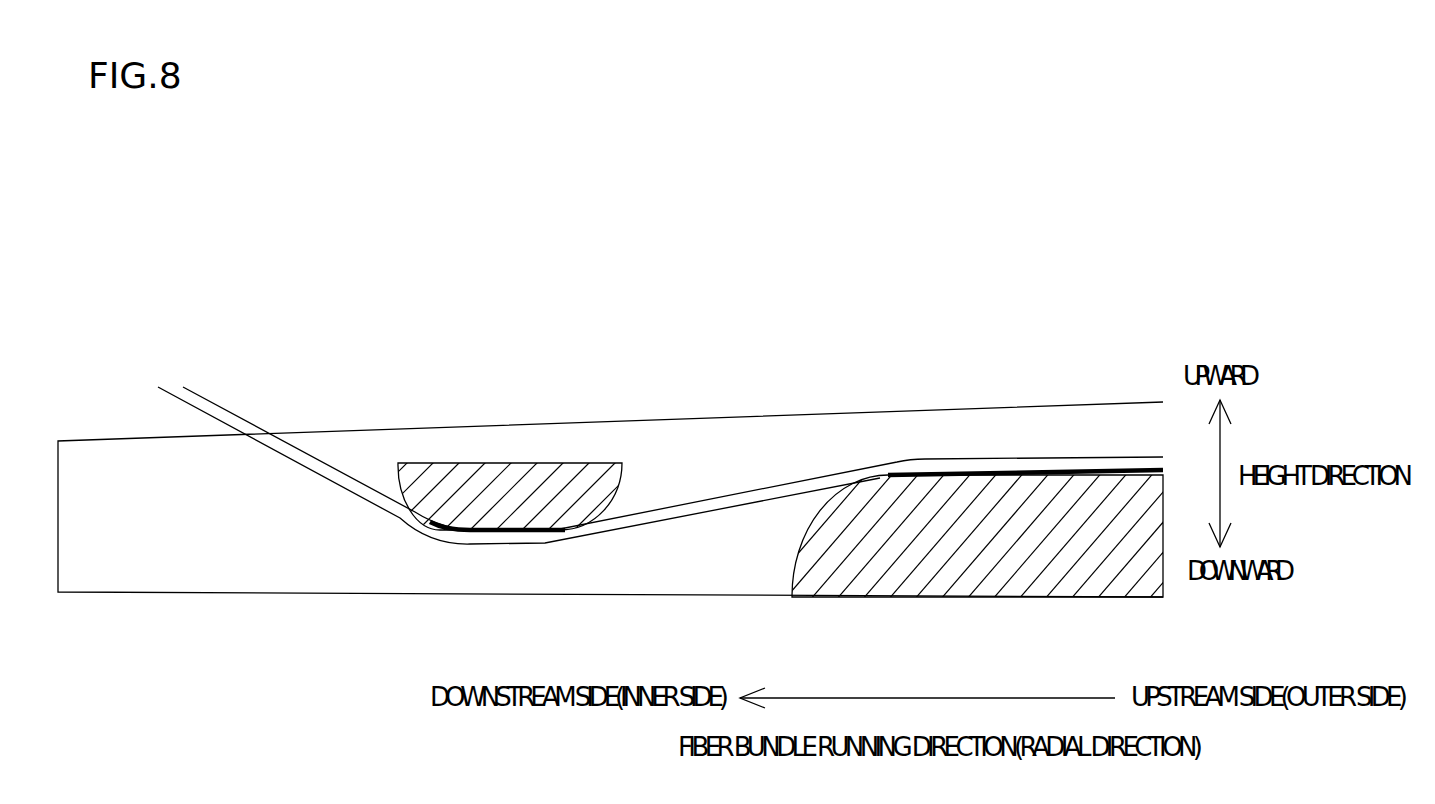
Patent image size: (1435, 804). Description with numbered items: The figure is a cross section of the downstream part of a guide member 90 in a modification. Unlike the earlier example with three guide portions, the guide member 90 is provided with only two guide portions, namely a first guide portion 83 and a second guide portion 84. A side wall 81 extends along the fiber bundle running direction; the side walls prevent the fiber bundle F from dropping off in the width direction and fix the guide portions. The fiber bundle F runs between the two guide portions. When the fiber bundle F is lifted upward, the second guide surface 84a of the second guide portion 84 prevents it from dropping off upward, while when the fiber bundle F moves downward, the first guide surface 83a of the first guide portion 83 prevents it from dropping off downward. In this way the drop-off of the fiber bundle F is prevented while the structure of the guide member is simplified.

The guide member 90 is at (162, 298).
The side wall 81 is at (348, 577).
The second guide portion 84 is at (455, 480).
The second guide surface 84a is at (530, 560).
The first guide portion 83 is at (960, 497).
The first guide surface 83a is at (1057, 430).
The fiber bundle F is at (748, 495).